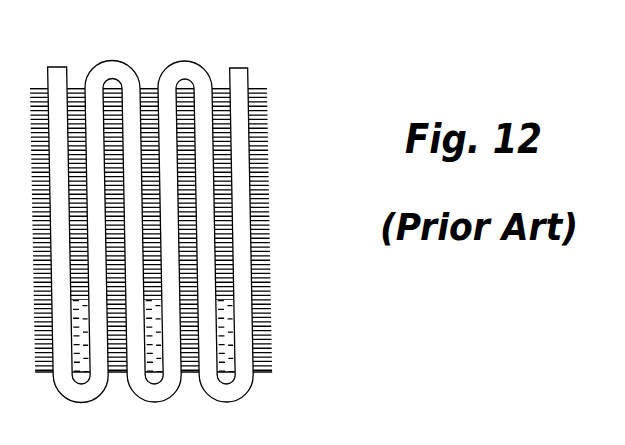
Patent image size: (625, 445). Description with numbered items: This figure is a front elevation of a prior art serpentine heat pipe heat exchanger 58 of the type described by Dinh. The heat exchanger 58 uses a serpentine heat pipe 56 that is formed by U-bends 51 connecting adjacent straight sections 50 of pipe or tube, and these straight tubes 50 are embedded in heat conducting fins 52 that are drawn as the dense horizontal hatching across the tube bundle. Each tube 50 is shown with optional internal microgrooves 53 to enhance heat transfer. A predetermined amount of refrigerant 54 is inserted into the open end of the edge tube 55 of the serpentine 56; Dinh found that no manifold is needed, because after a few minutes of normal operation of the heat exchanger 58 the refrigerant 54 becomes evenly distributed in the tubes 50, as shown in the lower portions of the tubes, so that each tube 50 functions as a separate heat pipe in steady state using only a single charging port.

The straight sections 50 is at (209, 272).
The U-bends 51 is at (185, 72).
The heat conducting fins 52 is at (266, 89).
The internal microgrooves 53 is at (257, 196).
The refrigerant 54 is at (249, 327).
The edge tube 55 is at (58, 66).
The serpentine heat pipe 56 is at (213, 85).
The heat pipe heat exchanger 58 is at (268, 155).